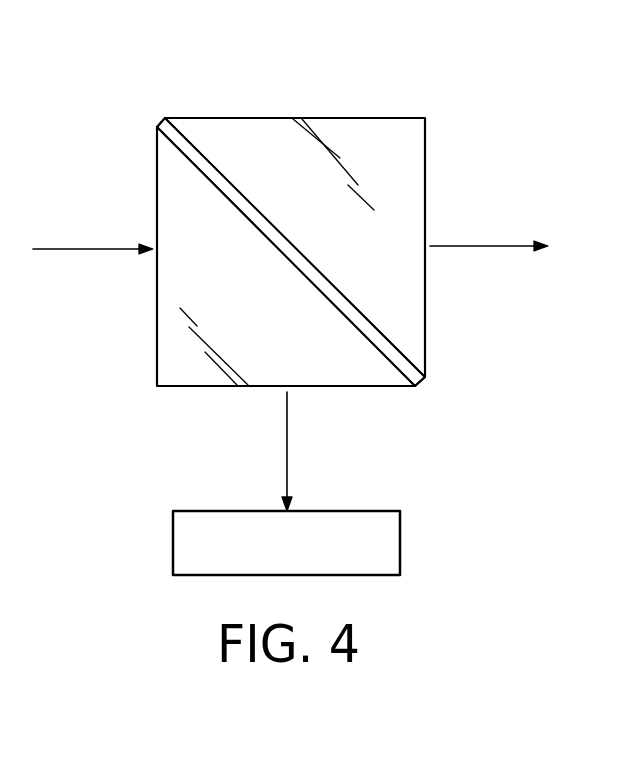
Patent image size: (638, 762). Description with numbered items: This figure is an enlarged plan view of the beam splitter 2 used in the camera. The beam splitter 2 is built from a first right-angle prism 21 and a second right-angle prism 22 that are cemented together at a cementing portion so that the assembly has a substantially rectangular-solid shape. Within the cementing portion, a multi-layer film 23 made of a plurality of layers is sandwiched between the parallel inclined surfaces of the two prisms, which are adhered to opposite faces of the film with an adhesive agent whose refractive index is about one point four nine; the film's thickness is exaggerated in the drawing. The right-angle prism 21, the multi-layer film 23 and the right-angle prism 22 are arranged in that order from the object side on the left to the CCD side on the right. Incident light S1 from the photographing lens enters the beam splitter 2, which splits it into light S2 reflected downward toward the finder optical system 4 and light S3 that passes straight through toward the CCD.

The beam splitter 2 is at (382, 100).
The first right-angle prism 21 is at (157, 330).
The second right-angle prism 22 is at (409, 170).
The multi-layer film 23 is at (159, 125).
The finder optical system 4 is at (400, 545).
The incident light S1 is at (87, 247).
The reflected light S2 is at (287, 440).
The transmitted light S3 is at (485, 247).